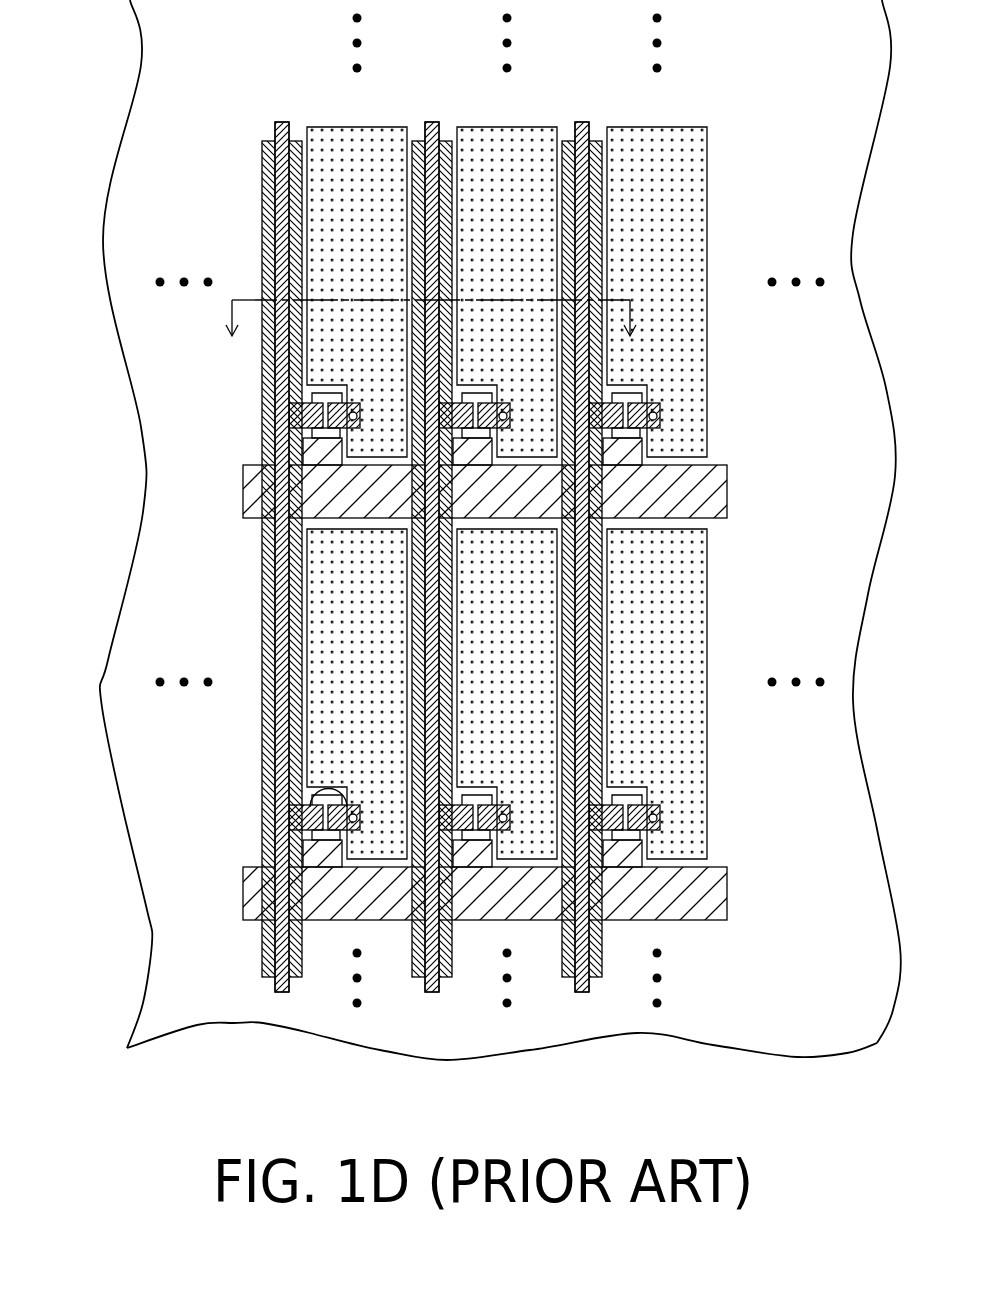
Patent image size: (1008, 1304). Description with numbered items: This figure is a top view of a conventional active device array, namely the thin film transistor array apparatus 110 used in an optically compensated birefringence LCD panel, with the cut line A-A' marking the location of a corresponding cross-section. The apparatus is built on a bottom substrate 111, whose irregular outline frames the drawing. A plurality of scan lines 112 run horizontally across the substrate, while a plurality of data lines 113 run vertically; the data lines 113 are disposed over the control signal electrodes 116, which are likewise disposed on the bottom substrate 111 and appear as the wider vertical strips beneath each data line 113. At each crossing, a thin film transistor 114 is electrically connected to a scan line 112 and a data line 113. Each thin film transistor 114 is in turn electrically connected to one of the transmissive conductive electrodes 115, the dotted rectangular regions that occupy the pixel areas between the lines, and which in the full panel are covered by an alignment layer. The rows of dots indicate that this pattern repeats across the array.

The thin film transistor array apparatus 110 is at (465, 556).
The bottom substrate 111 is at (165, 1003).
The scan lines 112 is at (245, 893).
The data lines 113 is at (287, 942).
The thin film transistors 114 is at (260, 817).
The transmissive conductive electrodes 115 is at (318, 643).
The control signal electrodes 116 is at (268, 587).